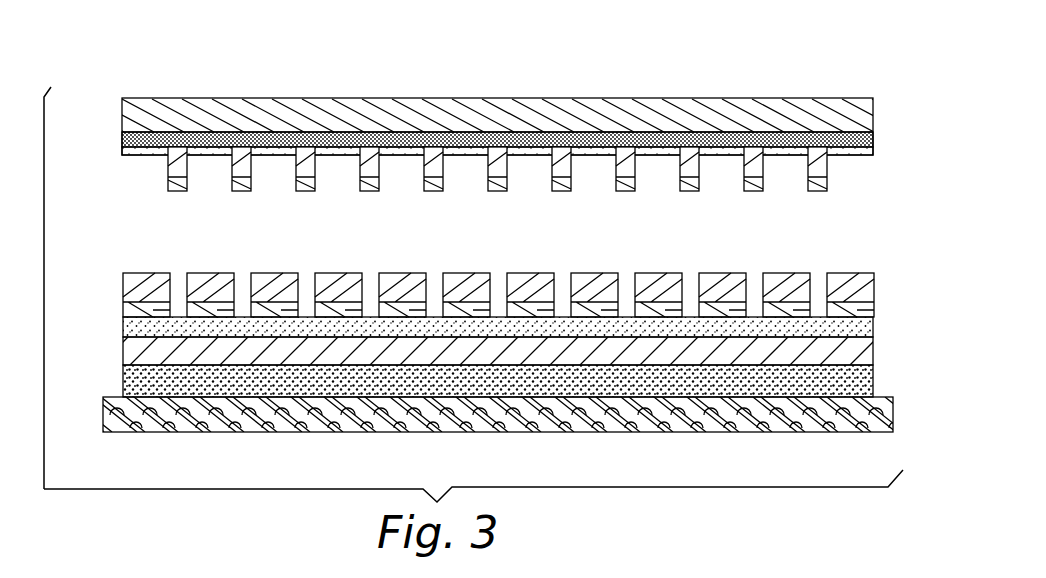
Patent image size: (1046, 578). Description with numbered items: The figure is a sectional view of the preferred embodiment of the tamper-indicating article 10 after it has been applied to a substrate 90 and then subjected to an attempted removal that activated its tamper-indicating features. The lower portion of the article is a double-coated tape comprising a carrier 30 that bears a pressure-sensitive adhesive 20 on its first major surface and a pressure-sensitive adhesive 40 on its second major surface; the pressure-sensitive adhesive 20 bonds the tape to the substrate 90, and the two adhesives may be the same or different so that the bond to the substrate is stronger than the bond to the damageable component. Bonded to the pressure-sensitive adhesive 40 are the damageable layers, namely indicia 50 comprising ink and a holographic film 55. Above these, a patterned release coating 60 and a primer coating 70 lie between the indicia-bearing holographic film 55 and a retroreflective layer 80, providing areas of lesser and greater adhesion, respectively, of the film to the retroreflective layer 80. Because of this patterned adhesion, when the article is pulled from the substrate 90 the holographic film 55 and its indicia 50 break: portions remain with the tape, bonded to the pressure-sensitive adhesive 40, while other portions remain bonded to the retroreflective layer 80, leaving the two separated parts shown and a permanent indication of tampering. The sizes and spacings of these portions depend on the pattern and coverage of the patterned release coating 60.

The tamper-indicating article 10 is at (704, 78).
The pressure-sensitive adhesive 20 is at (123, 377).
The carrier 30 is at (123, 353).
The pressure-sensitive adhesive 40 is at (123, 328).
The damageable layer 50 is at (170, 182).
The damageable layer 55 is at (827, 165).
The patterned release coating 60 is at (713, 157).
The primer coating 70 is at (122, 141).
The retroreflective layer 80 is at (873, 108).
The substrate 90 is at (173, 432).